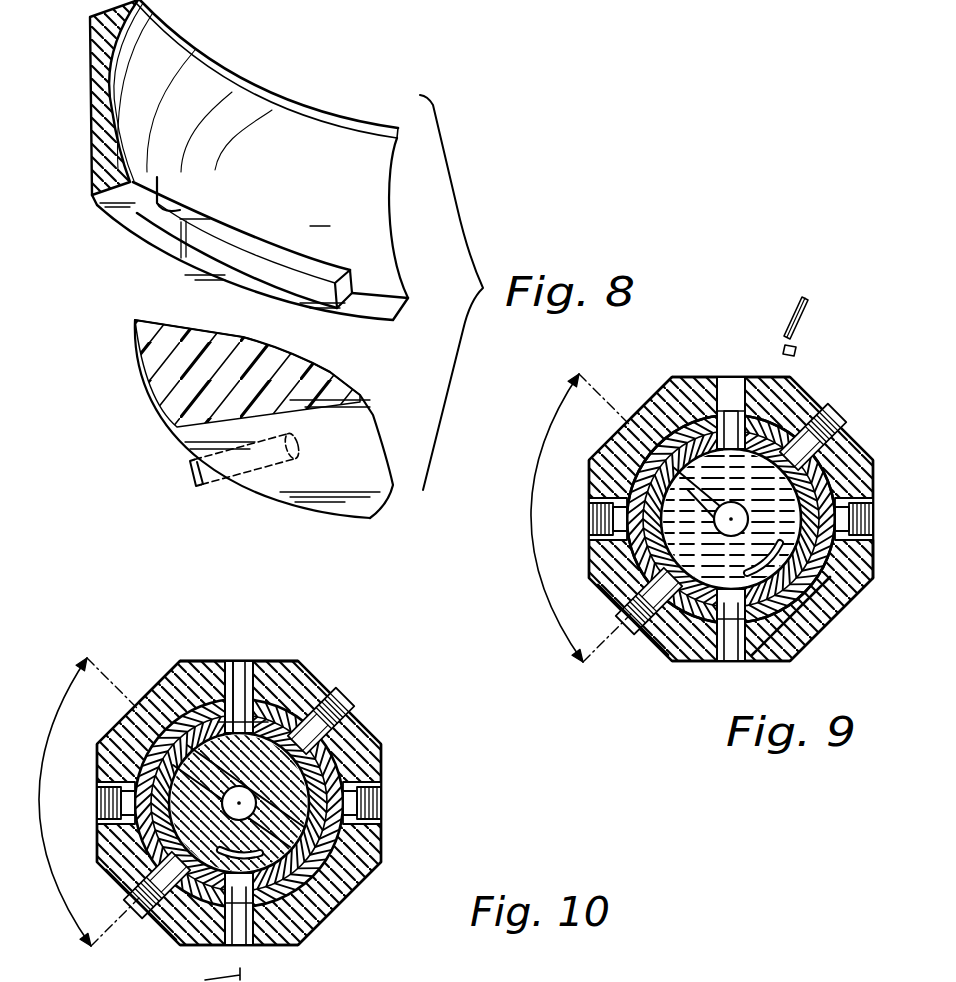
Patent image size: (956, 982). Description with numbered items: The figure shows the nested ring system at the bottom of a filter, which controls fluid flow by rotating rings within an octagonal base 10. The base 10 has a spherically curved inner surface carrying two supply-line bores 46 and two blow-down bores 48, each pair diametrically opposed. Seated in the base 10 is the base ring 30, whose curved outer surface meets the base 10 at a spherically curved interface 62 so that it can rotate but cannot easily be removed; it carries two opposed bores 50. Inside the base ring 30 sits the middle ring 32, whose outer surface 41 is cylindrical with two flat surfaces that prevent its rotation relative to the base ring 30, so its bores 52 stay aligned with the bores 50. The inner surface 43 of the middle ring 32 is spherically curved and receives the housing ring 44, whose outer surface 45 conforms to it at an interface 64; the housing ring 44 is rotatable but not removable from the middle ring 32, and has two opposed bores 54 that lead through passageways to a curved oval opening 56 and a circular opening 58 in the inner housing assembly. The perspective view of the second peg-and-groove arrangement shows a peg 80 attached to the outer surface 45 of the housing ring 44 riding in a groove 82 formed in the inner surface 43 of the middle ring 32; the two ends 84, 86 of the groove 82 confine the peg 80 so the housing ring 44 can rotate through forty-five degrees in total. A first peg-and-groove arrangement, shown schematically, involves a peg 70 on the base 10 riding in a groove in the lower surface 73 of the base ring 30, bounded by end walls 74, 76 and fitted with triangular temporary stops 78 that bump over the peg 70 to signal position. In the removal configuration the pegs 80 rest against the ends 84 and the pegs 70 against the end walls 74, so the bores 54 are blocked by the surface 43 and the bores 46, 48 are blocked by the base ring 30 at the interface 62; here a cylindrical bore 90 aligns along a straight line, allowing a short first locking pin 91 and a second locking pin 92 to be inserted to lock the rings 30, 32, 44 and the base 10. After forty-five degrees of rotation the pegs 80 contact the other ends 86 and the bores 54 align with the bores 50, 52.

In FIG. 9, the base 10 is at (692, 663).
In FIG. 10, the base 10 is at (328, 915).
In FIG. 9, the base ring 30 is at (686, 432).
In FIG. 10, the base ring 30 is at (125, 778).
In FIG. 8, the middle ring 32 is at (228, 72).
In FIG. 9, the middle ring 32 is at (628, 566).
In FIG. 10, the middle ring 32 is at (135, 830).
In FIG. 8, the outer surface 41 is at (90, 93).
In FIG. 8, the inner surface 43 is at (283, 140).
In FIG. 8, the housing ring 44 is at (137, 347).
In FIG. 9, the housing ring 44 is at (800, 462).
In FIG. 10, the housing ring 44 is at (388, 772).
In FIG. 8, the outer surface 45 is at (150, 378).
In FIG. 9, the bores 46 is at (598, 510).
In FIG. 10, the bores 46 is at (100, 800).
In FIG. 9, the bores 48 is at (822, 422).
In FIG. 10, the bores 48 is at (322, 710).
In FIG. 9, the bores 50 is at (730, 425).
In FIG. 10, the bores 50 is at (244, 685).
In FIG. 10, the bores 52 is at (239, 680).
In FIG. 9, the bores 54 is at (715, 520).
In FIG. 10, the bores 54 is at (217, 789).
In FIG. 10, the curved oval opening 56 is at (227, 837).
In FIG. 9, the circular opening 58 is at (742, 543).
In FIG. 10, the circular opening 58 is at (220, 805).
In FIG. 9, the interface 62 is at (762, 640).
In FIG. 9, the interface 64 is at (640, 470).
In FIG. 9, the peg 70 is at (652, 418).
In FIG. 10, the peg 70 is at (168, 700).
In FIG. 8, the lower surface 73 is at (370, 332).
In FIG. 9, the end wall 74 is at (575, 372).
In FIG. 10, the end wall 74 is at (92, 662).
In FIG. 9, the end wall 76 is at (575, 665).
In FIG. 10, the end wall 76 is at (95, 945).
In FIG. 9, the temporary stops 78 is at (540, 518).
In FIG. 10, the temporary stops 78 is at (55, 810).
In FIG. 8, the peg 80 is at (194, 488).
In FIG. 9, the peg 80 is at (797, 524).
In FIG. 10, the peg 80 is at (238, 796).
In FIG. 8, the groove 82 is at (200, 252).
In FIG. 9, the groove 82 is at (815, 605).
In FIG. 8, the end 84 is at (170, 210).
In FIG. 9, the end 84 is at (831, 600).
In FIG. 10, the end 84 is at (339, 897).
In FIG. 8, the end 86 is at (338, 282).
In FIG. 9, the end 86 is at (760, 617).
In FIG. 10, the end 86 is at (268, 905).
In FIG. 9, the cylindrical bore 90 is at (776, 422).
In FIG. 10, the cylindrical bore 90 is at (305, 675).
In FIG. 9, the first locking pin 91 is at (800, 351).
In FIG. 9, the second locking pin 92 is at (808, 306).
In FIG. 10, the second locking pin 92 is at (268, 660).